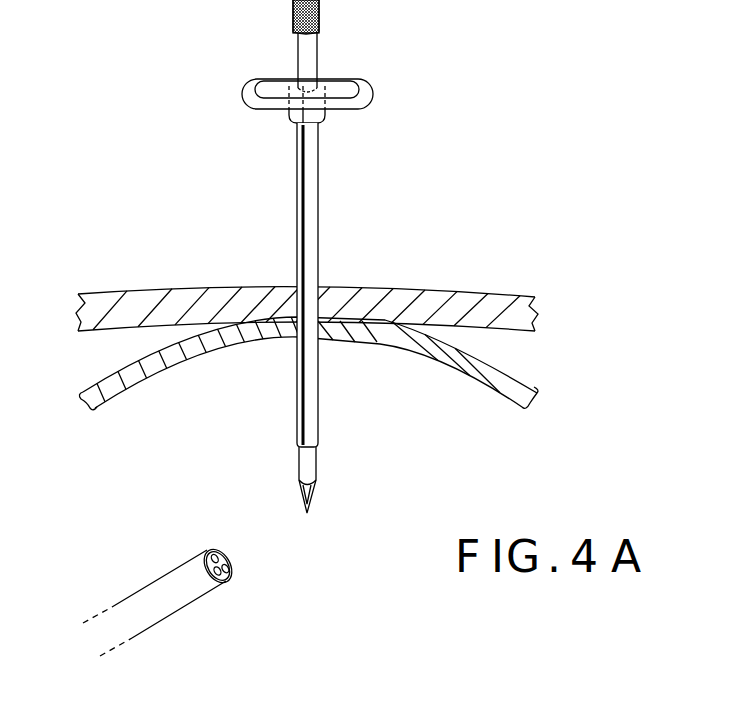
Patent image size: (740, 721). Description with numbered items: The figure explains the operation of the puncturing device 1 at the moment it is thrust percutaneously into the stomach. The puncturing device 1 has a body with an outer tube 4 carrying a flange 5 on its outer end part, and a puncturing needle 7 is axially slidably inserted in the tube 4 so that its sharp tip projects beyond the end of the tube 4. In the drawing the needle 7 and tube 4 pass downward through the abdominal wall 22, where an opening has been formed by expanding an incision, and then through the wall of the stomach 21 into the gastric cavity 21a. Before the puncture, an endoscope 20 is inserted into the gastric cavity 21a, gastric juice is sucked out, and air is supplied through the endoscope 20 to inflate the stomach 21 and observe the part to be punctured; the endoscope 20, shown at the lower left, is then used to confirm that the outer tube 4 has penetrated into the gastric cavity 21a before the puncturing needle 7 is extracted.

The puncturing device 1 is at (338, 62).
The tube 4 is at (312, 205).
The flange 5 is at (362, 89).
The puncturing needle 7 is at (306, 62).
The endoscope 20 is at (177, 601).
The stomach 21 is at (465, 363).
The gastric cavity 21a is at (178, 442).
The abdominal wall 22 is at (462, 298).